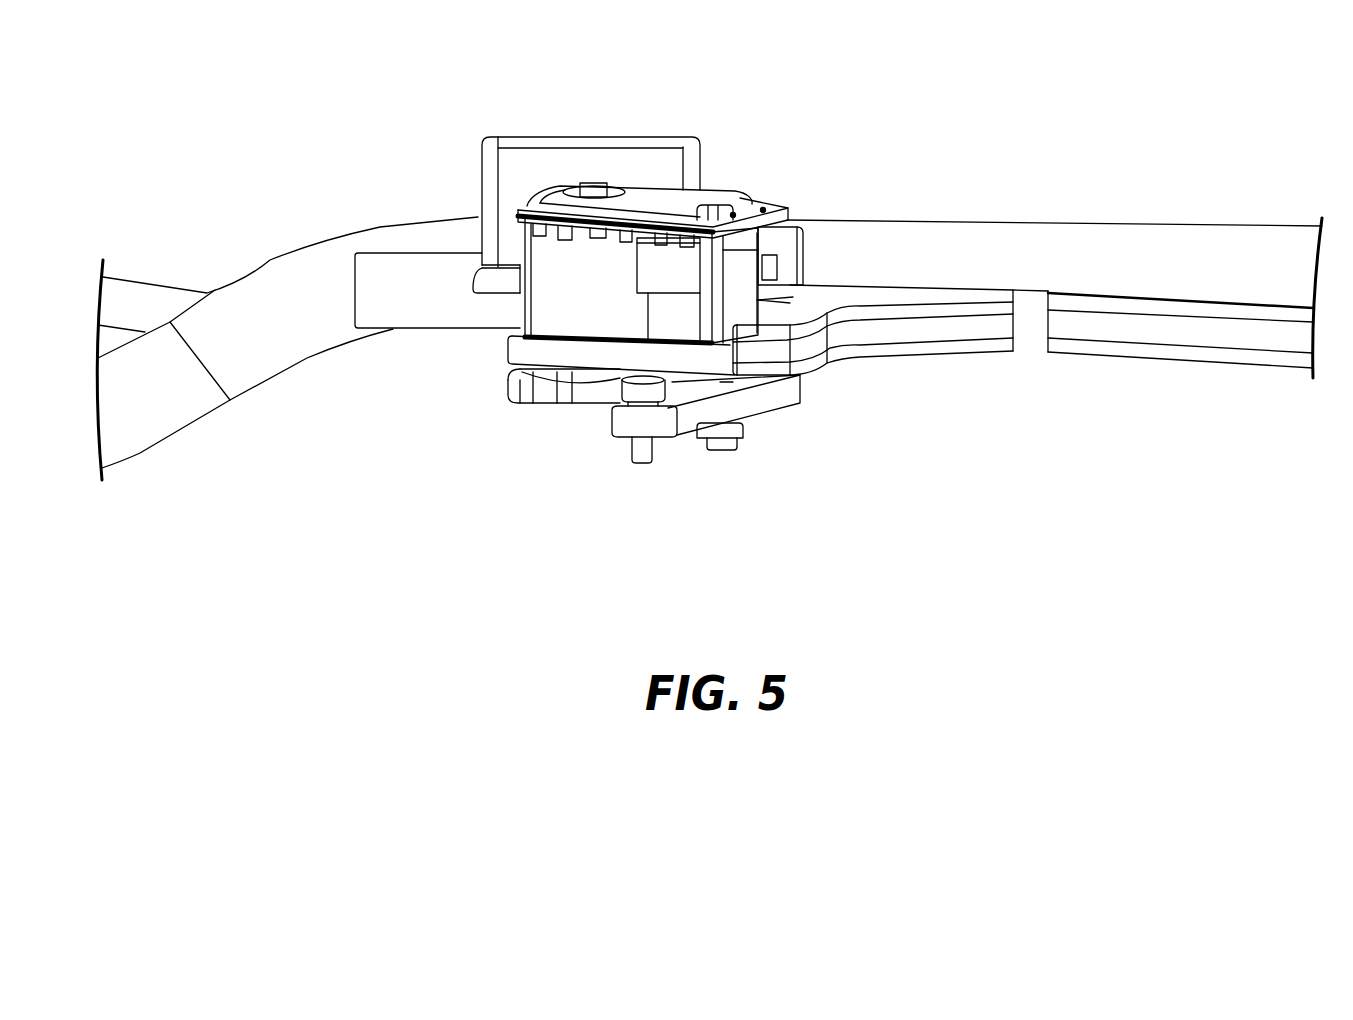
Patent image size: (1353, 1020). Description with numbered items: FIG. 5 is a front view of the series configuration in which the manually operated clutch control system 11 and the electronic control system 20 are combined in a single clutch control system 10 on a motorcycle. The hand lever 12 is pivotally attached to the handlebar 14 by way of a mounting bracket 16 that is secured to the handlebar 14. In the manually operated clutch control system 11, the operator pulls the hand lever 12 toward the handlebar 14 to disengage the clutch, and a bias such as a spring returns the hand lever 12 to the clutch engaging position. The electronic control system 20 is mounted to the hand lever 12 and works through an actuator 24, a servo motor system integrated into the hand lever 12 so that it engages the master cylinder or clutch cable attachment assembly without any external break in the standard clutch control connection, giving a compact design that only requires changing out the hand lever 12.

The clutch control system 10 is at (961, 540).
The manually operated clutch control system 11 is at (990, 365).
The hand lever 12 is at (1097, 332).
The handlebar 14 is at (1077, 252).
The mounting bracket 16 is at (635, 162).
The electronic control system 20 is at (548, 287).
The actuator 24 is at (603, 302).